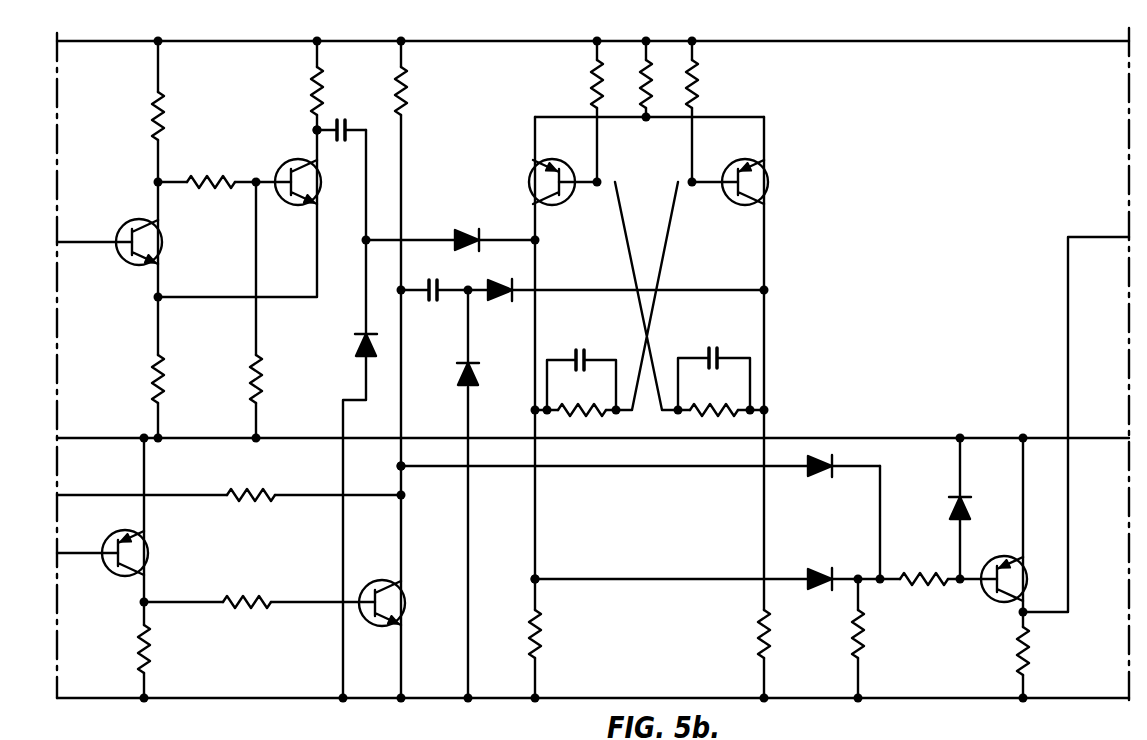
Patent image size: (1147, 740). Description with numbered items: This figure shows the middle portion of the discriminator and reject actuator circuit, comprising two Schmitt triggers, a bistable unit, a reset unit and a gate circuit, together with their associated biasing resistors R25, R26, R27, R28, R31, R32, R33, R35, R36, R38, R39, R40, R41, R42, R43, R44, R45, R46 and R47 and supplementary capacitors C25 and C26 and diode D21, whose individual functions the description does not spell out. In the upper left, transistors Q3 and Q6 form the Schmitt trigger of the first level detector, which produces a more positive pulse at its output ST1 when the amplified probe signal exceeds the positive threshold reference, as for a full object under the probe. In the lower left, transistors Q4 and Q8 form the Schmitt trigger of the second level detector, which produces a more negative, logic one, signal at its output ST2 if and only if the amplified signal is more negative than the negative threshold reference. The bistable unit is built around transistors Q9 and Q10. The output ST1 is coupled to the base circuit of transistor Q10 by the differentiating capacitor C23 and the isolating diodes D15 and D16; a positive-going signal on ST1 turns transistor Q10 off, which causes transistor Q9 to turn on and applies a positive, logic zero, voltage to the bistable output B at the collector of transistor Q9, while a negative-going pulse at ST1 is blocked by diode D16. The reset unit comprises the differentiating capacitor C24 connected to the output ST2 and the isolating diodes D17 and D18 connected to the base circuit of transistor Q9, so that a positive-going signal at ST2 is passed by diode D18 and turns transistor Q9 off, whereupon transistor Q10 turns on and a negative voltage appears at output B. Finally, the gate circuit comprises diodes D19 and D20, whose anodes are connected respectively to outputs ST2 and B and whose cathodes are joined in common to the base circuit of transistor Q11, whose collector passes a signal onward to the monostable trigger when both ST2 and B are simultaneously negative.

The resistor R25 is at (166, 110).
The resistor R26 is at (208, 178).
The resistor R27 is at (167, 392).
The resistor R28 is at (153, 652).
The resistor R31 is at (260, 392).
The resistor R32 is at (247, 490).
The resistor R33 is at (247, 610).
The resistor R35 is at (324, 90).
The resistor R36 is at (409, 90).
The resistor R38 is at (543, 638).
The resistor R39 is at (592, 92).
The resistor R40 is at (562, 414).
The resistor R41 is at (652, 96).
The resistor R42 is at (700, 90).
The resistor R43 is at (745, 416).
The resistor R44 is at (772, 637).
The resistor R45 is at (919, 590).
The resistor R46 is at (867, 640).
The resistor R47 is at (1034, 650).
The differentiating capacitor C23 is at (335, 131).
The differentiating capacitor C24 is at (433, 306).
The capacitor C25 is at (595, 322).
The capacitor C26 is at (718, 322).
The isolating diode D15 is at (356, 349).
The isolating diode D16 is at (465, 220).
The isolating diode D17 is at (464, 396).
The isolating diode D18 is at (497, 305).
The gate diode D19 is at (819, 478).
The gate diode D20 is at (818, 568).
The diode D21 is at (957, 522).
The transistor Q3 is at (161, 240).
The transistor Q4 is at (150, 552).
The transistor Q6 is at (319, 178).
The transistor Q8 is at (407, 604).
The transistor Q9 is at (538, 170).
The transistor Q10 is at (767, 170).
The transistor Q11 is at (1025, 570).
The output of the Schmitt trigger ST1 is at (316, 128).
The output of the Schmitt trigger ST2 is at (406, 470).
The output of the bistable unit B is at (534, 577).